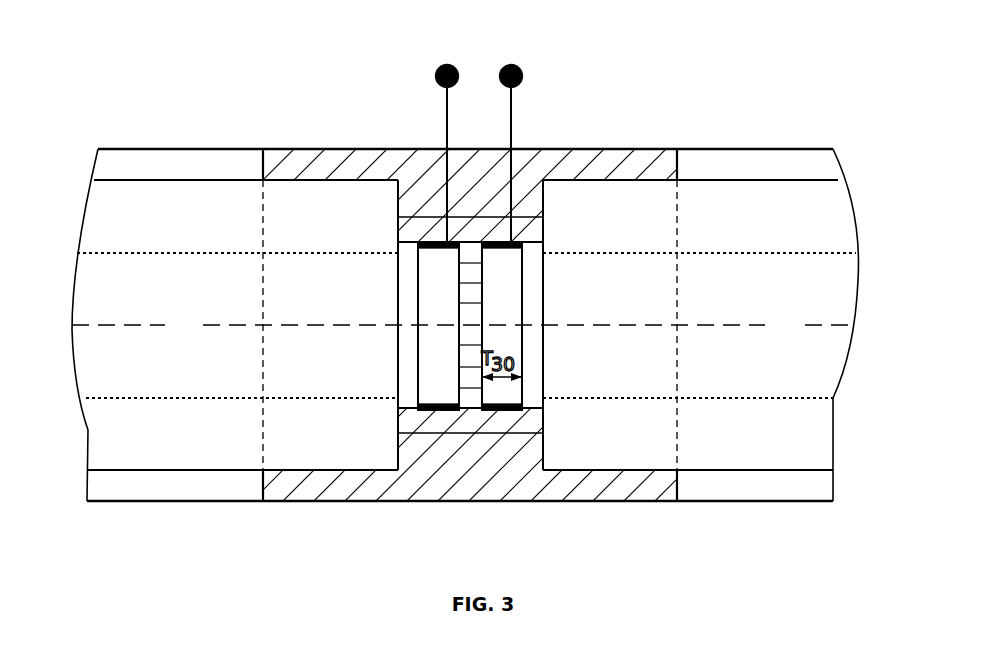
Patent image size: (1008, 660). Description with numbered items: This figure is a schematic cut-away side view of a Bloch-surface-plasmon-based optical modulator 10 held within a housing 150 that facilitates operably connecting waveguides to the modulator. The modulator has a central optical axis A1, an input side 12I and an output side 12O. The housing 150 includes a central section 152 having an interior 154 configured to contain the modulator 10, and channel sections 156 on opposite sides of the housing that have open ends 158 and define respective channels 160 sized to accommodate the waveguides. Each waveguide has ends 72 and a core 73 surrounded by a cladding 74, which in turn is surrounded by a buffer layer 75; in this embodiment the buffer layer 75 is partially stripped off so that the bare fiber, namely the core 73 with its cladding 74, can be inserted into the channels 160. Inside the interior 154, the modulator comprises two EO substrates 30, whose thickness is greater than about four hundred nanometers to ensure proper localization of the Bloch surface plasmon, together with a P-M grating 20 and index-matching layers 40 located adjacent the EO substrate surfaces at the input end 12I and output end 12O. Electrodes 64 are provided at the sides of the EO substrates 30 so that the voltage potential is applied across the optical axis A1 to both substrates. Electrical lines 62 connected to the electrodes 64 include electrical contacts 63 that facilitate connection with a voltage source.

The Bloch-surface-plasmon-based optical modulator 10 is at (478, 148).
The input side 12I is at (398, 285).
The output side 12O is at (543, 285).
The P-M grating 20 is at (474, 416).
The EO substrate 30 is at (430, 306).
The index-matching layer 40 is at (405, 272).
The electrical line 62 is at (447, 108).
The electrical contact 63 is at (511, 64).
The electrode 64 is at (437, 242).
The waveguide end 72 is at (412, 346).
The core 73 is at (171, 336).
The cladding 74 is at (182, 233).
The buffer layer 75 is at (170, 165).
The housing 150 is at (546, 128).
The central section 152 is at (431, 146).
The interior 154 is at (448, 392).
The channel section 156 is at (333, 147).
The open end 158 is at (248, 200).
The channel 160 is at (306, 449).
The central optical axis A1 is at (688, 325).